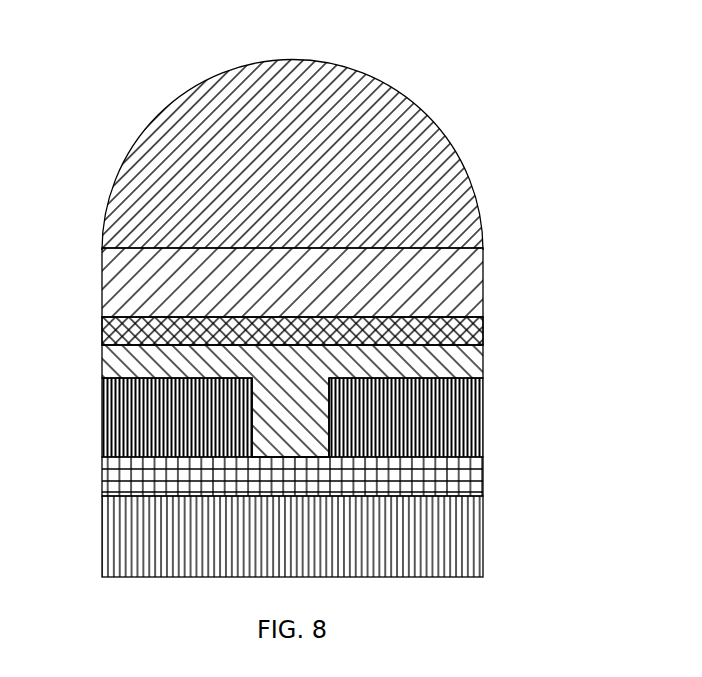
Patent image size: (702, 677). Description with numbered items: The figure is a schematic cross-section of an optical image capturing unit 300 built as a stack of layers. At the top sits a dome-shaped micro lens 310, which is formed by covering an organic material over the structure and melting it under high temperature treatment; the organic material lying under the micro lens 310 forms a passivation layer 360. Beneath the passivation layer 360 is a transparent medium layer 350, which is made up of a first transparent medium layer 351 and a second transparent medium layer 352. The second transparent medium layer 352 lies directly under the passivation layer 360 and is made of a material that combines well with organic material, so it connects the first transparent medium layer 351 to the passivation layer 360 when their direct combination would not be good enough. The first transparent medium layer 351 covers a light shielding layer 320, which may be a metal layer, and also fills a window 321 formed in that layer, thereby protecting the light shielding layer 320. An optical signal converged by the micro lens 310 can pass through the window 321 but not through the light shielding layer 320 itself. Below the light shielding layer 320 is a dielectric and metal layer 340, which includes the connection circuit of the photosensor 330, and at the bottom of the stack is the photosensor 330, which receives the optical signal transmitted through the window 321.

The optical image capturing unit 300 is at (272, 31).
The micro lens 310 is at (417, 105).
The passivation layer 360 is at (483, 275).
The transparent medium layer 350 is at (296, 379).
The second transparent medium layer 352 is at (483, 338).
The first transparent medium layer 351 is at (483, 368).
The light shielding layer 320 is at (487, 428).
The window 321 is at (303, 433).
The dielectric and metal layer 340 is at (483, 470).
The photosensor 330 is at (485, 528).